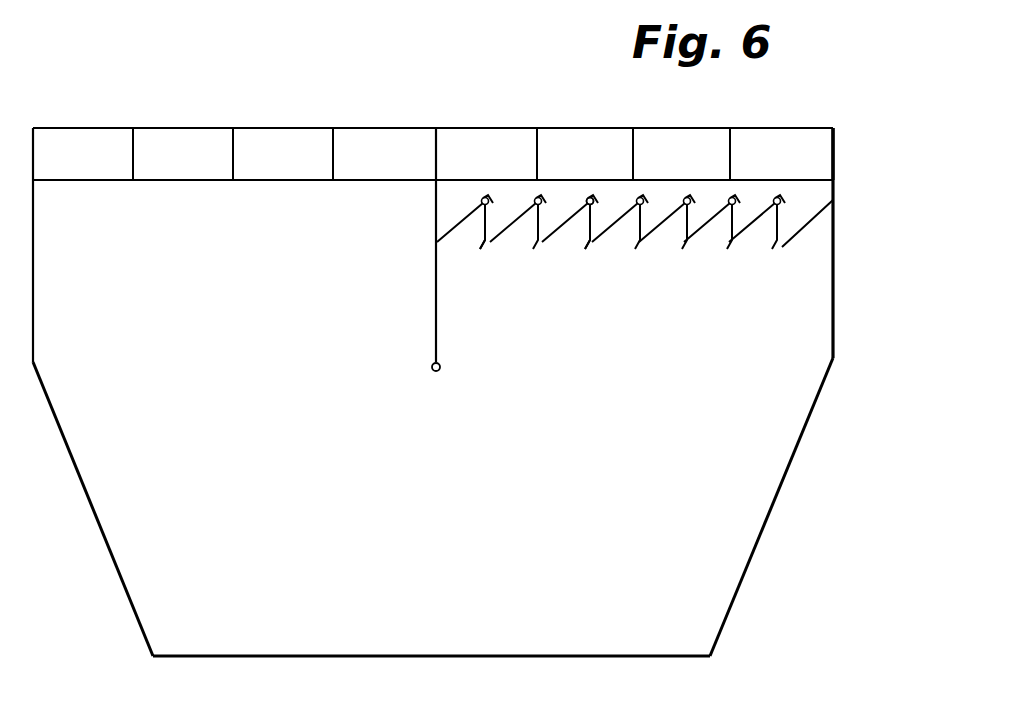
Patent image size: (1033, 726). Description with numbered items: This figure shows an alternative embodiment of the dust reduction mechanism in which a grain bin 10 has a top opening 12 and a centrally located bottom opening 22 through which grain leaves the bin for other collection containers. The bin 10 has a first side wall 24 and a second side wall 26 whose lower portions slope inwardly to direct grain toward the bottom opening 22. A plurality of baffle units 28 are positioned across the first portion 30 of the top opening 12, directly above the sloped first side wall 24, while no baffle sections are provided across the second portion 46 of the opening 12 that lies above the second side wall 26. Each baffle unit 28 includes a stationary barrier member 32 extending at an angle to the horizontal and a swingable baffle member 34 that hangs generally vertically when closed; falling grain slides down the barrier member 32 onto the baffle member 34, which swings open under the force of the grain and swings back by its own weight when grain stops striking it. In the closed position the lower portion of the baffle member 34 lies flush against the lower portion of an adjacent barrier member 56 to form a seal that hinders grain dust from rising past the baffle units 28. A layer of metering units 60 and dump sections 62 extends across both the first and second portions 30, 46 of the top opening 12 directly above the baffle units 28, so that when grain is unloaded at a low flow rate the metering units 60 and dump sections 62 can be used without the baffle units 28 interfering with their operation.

The grain bin 10 is at (834, 320).
The top opening 12 is at (509, 118).
The bottom opening 22 is at (560, 659).
The first side wall 24 is at (770, 522).
The second side wall 26 is at (97, 528).
The baffle unit 28 is at (811, 226).
The first portion 30 is at (612, 82).
The barrier member 32 is at (492, 240).
The baffle member 34 is at (585, 230).
The second portion 46 is at (291, 120).
The adjacent barrier member 56 is at (615, 232).
The metering unit 60 is at (836, 128).
The dump section 62 is at (836, 151).